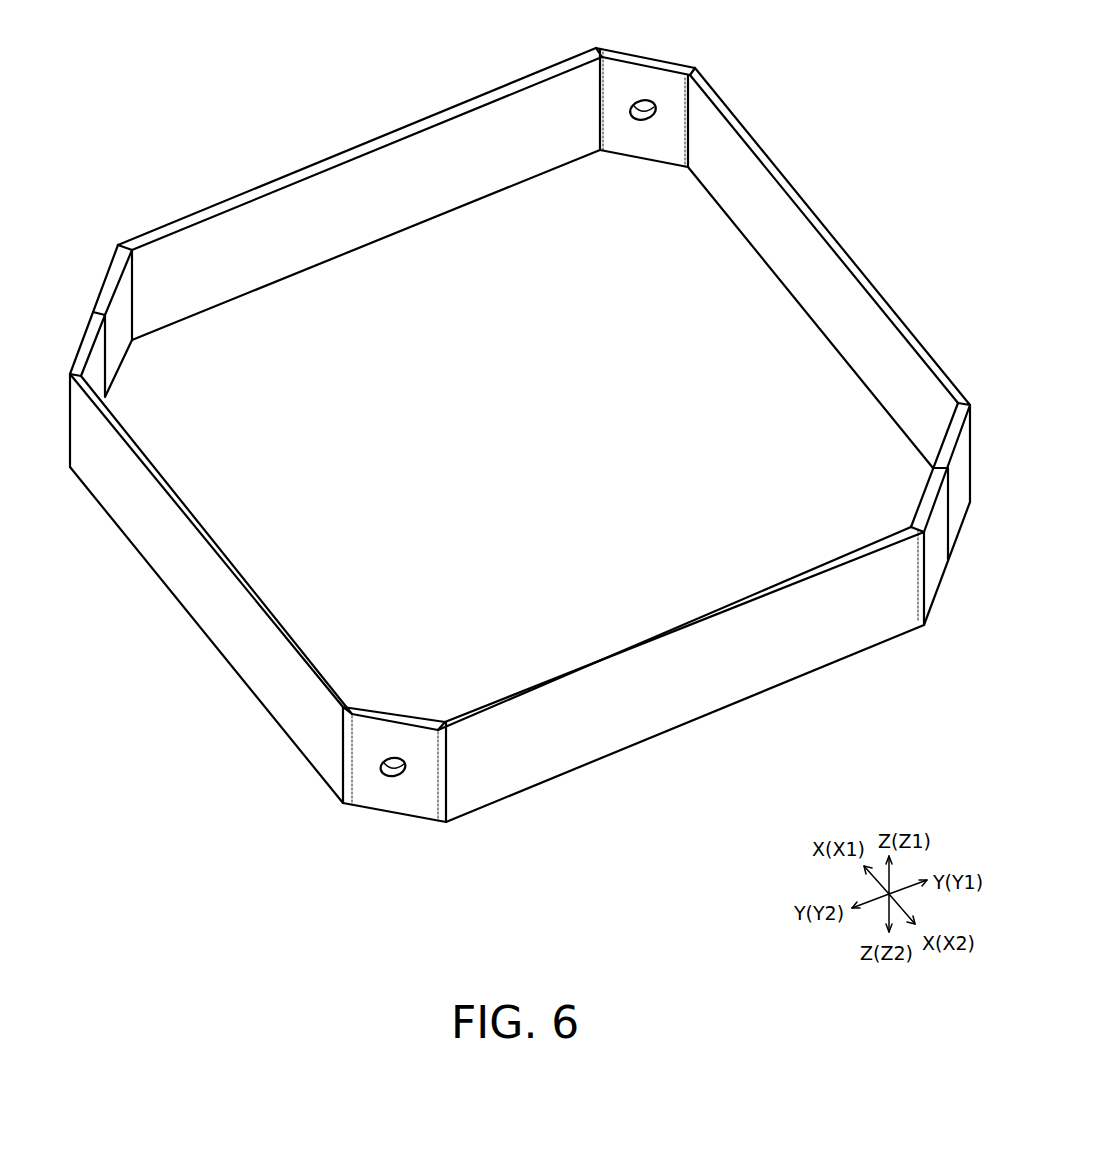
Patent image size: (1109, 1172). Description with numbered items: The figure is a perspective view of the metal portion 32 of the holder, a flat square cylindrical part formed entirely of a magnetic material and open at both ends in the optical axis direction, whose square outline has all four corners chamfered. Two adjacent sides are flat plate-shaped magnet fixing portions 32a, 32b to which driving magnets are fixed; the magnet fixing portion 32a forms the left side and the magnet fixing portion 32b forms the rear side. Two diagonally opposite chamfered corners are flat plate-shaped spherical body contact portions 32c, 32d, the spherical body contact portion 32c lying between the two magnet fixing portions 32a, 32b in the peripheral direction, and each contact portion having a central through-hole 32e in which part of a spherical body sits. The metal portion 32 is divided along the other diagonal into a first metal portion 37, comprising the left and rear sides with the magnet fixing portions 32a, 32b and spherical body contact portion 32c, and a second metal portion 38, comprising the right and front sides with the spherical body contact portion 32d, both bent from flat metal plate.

The metal portion 32 is at (520, 444).
The magnet fixing portion 32a is at (665, 630).
The magnet fixing portion 32b is at (219, 546).
The spherical body contact portion 32c is at (398, 712).
The spherical body contact portion 32d is at (645, 56).
The through-hole 32e is at (644, 118).
The first metal portion 37 is at (803, 570).
The second metal portion 38 is at (265, 293).